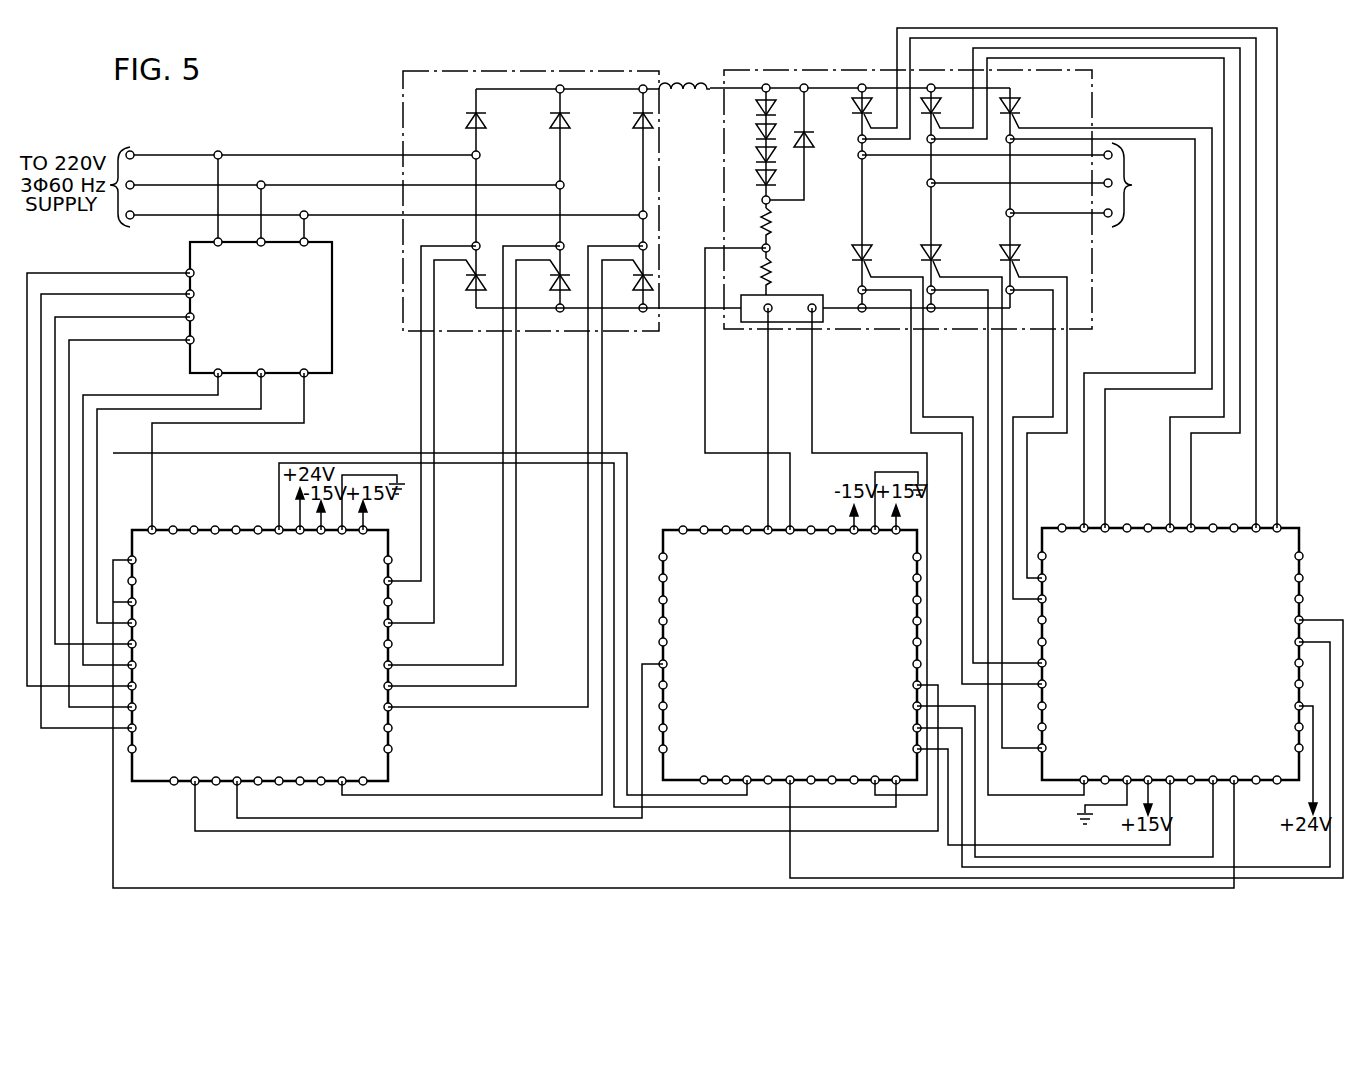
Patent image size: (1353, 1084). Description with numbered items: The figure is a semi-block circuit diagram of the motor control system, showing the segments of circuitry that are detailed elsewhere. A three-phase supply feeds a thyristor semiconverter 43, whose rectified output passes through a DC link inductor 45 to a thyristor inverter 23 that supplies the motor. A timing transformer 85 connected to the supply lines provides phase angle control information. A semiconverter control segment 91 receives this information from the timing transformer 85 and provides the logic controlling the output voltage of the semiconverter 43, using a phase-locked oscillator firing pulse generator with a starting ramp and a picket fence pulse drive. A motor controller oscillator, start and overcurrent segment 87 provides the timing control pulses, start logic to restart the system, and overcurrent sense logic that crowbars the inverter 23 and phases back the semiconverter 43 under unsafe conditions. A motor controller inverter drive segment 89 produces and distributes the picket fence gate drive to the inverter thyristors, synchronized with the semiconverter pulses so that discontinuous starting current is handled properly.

The semiconverter 43 is at (403, 113).
The DC link inductor 45 is at (708, 96).
The inverter 23 is at (1110, 98).
The timing transformer 85 is at (284, 313).
The semiconverter control segment 91 is at (270, 653).
The motor controller oscillator, start and overcurrent segment 87 is at (798, 653).
The motor controller inverter drive segment 89 is at (1180, 653).